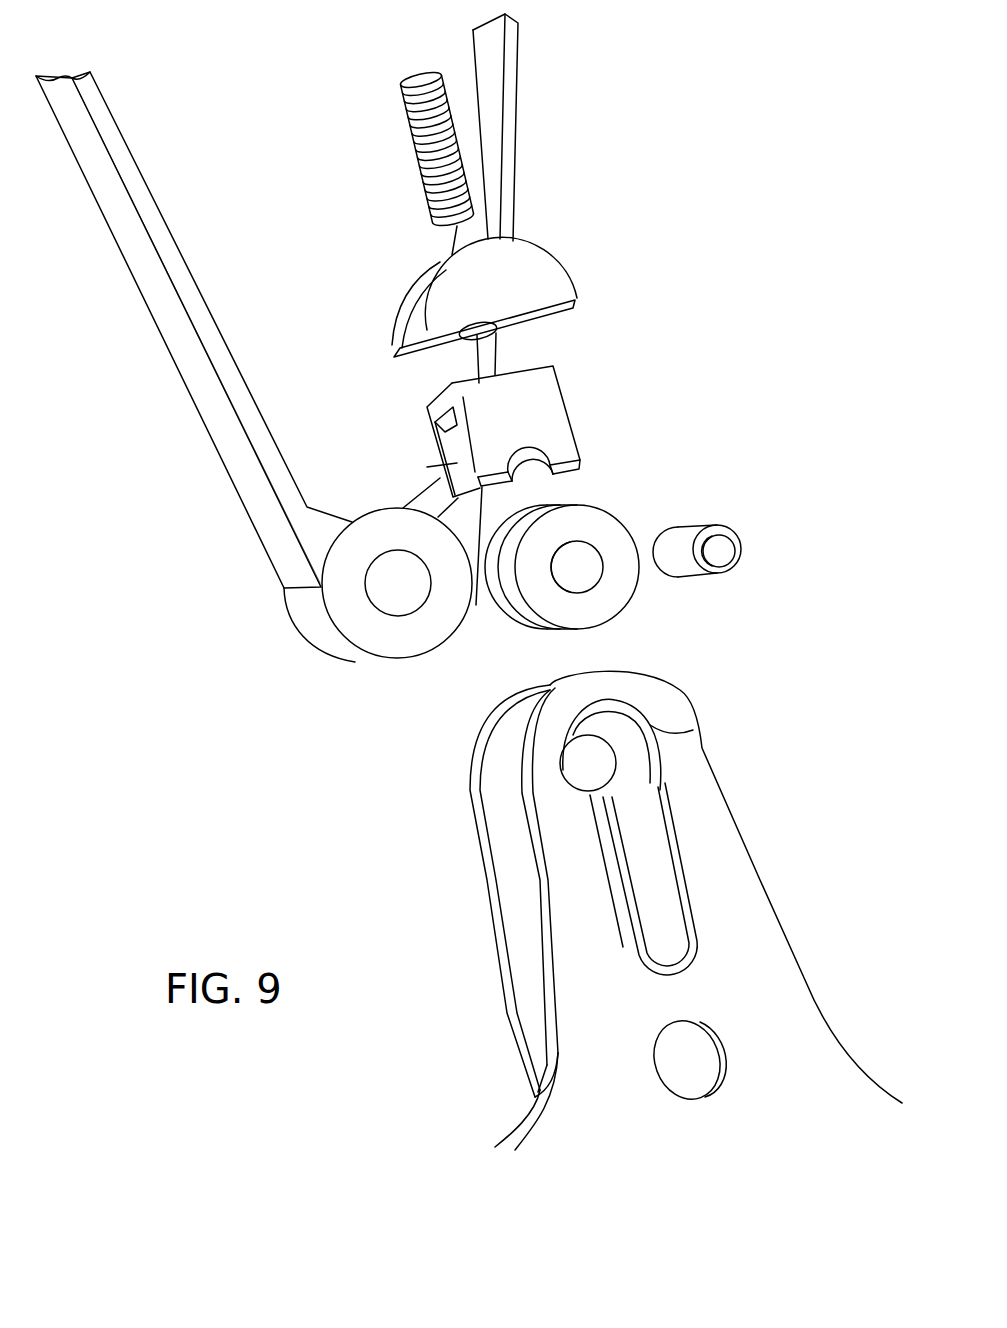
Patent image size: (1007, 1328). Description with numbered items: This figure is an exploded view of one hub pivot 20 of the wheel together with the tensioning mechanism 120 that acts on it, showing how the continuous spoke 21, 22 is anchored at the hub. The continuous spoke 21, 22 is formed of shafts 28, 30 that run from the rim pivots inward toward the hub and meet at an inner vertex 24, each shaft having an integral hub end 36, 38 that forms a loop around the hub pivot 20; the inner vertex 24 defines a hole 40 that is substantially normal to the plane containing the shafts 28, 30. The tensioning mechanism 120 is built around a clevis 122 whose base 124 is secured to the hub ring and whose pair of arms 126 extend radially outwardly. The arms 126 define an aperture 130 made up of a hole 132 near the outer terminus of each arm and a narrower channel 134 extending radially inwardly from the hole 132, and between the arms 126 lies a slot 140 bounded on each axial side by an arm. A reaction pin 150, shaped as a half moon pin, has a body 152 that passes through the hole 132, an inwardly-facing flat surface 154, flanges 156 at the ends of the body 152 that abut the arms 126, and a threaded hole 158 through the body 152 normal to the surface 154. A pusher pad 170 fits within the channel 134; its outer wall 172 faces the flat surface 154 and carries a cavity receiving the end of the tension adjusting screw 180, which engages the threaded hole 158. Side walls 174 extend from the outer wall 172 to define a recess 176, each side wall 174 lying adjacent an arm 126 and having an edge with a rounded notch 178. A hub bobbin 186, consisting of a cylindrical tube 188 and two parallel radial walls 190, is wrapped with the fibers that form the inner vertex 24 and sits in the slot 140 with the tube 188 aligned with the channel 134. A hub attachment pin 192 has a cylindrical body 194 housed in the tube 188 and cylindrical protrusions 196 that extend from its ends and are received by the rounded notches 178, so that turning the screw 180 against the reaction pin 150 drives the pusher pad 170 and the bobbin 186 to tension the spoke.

The hub pivot 20 is at (818, 511).
The right continuous spoke 21 is at (187, 330).
The left continuous spoke 22 is at (187, 330).
The inner vertex 24 is at (355, 547).
The shaft 28 is at (175, 343).
The shaft 30 is at (510, 67).
The hub end 36 is at (297, 562).
The hub end 38 is at (427, 502).
The hole 40 is at (398, 582).
The tensioning mechanism 120 is at (697, 232).
The clevis 122 is at (647, 908).
The base 124 is at (522, 1092).
The arm 126 is at (508, 1013).
The aperture 130 is at (593, 793).
The hole 132 is at (590, 758).
The channel 134 is at (633, 948).
The slot 140 is at (514, 917).
The reaction pin 150 is at (484, 277).
The body 152 is at (422, 284).
The flat surface 154 is at (533, 320).
The flange 156 is at (393, 314).
The threaded hole 158 is at (480, 330).
The pusher pad 170 is at (531, 425).
The outer wall 172 is at (440, 394).
The side wall 174 is at (438, 424).
The recess 176 is at (427, 466).
The rounded notch 178 is at (550, 453).
The tension adjusting screw 180 is at (400, 98).
The hub bobbin 186 is at (574, 565).
The cylindrical tube 188 is at (590, 575).
The radial wall 190 is at (537, 590).
The hub attachment pin 192 is at (735, 567).
The cylindrical body 194 is at (685, 543).
The cylindrical protrusion 196 is at (725, 547).